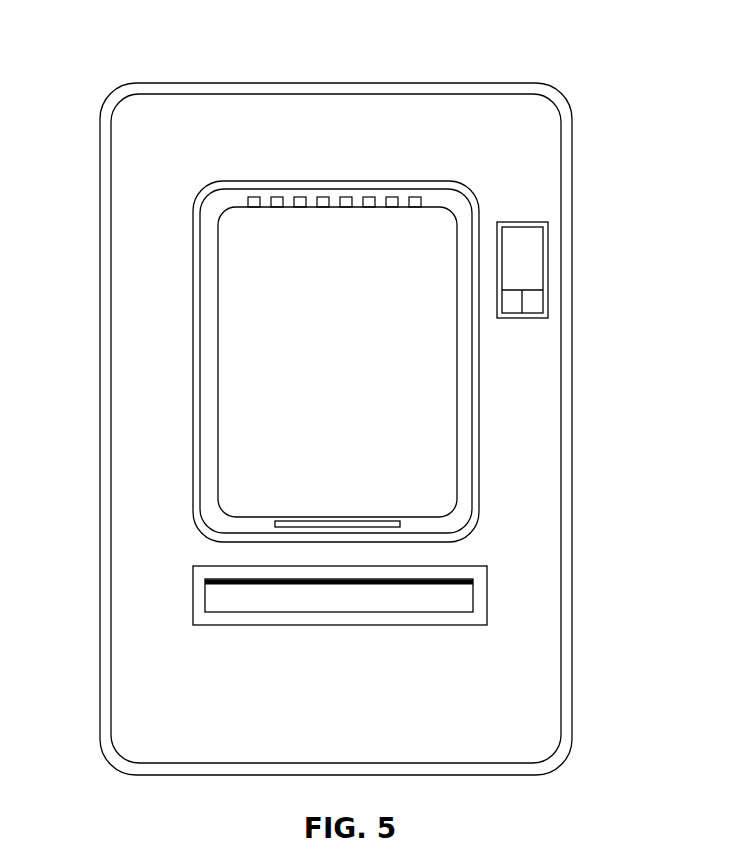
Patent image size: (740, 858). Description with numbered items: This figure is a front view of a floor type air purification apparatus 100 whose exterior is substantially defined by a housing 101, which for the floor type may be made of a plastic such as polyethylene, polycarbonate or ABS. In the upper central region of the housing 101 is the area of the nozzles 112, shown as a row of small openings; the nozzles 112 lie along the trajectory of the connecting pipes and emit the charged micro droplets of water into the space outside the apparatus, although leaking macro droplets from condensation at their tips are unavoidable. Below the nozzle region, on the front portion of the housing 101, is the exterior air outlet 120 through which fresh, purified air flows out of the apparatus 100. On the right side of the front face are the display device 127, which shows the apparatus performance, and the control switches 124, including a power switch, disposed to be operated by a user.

The air purification apparatus 100 is at (124, 58).
The housing 101 is at (573, 427).
The nozzles 112 is at (420, 197).
The exterior air outlets 120 is at (190, 593).
The control switches 124 is at (533, 300).
The display device 127 is at (550, 240).